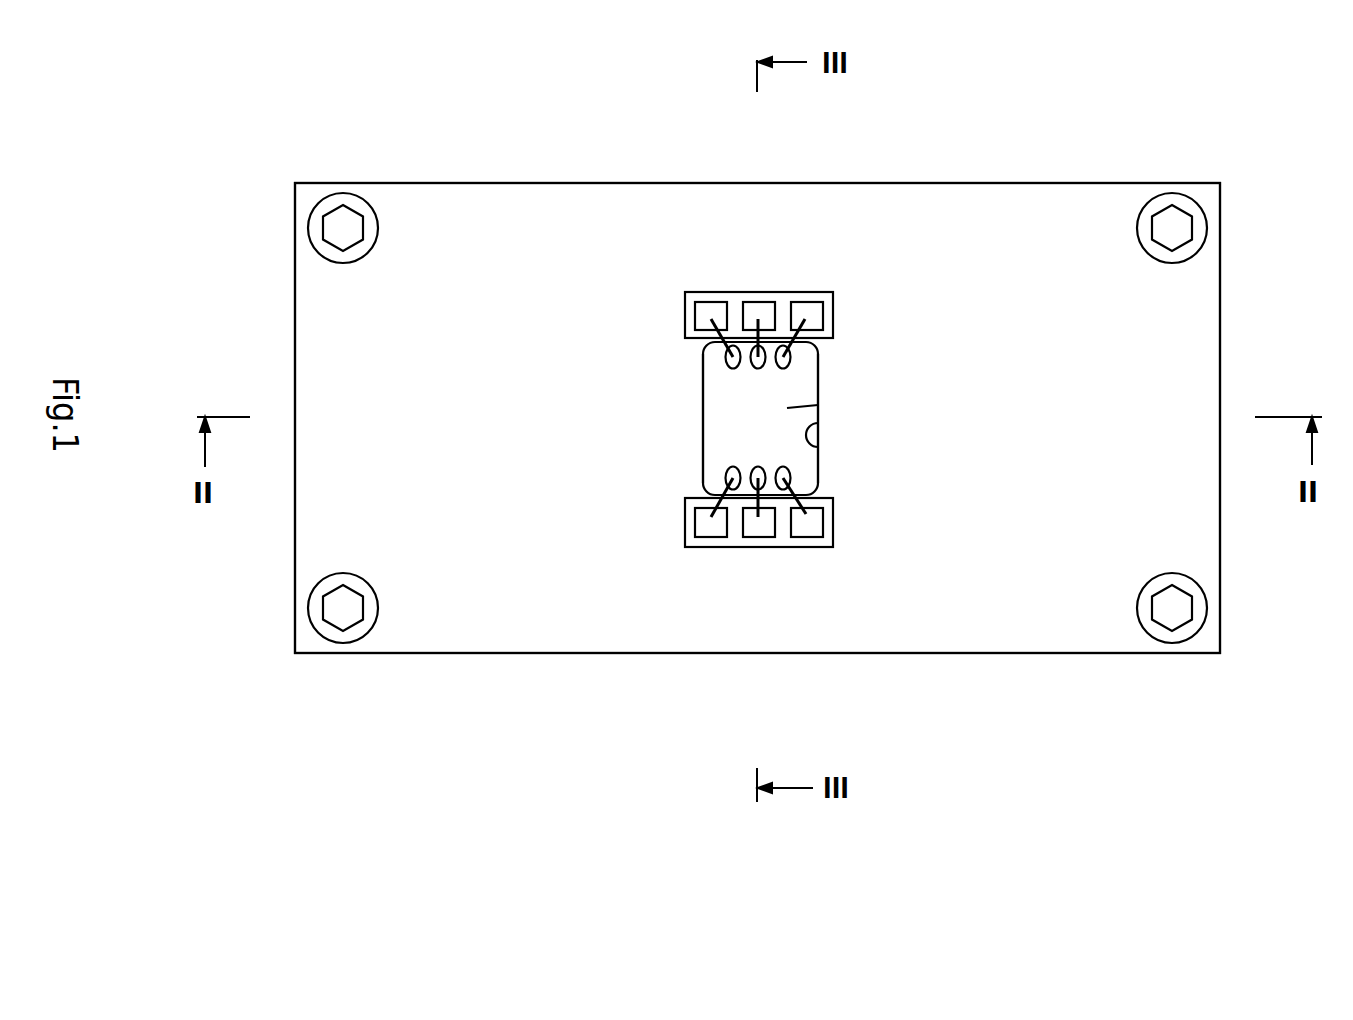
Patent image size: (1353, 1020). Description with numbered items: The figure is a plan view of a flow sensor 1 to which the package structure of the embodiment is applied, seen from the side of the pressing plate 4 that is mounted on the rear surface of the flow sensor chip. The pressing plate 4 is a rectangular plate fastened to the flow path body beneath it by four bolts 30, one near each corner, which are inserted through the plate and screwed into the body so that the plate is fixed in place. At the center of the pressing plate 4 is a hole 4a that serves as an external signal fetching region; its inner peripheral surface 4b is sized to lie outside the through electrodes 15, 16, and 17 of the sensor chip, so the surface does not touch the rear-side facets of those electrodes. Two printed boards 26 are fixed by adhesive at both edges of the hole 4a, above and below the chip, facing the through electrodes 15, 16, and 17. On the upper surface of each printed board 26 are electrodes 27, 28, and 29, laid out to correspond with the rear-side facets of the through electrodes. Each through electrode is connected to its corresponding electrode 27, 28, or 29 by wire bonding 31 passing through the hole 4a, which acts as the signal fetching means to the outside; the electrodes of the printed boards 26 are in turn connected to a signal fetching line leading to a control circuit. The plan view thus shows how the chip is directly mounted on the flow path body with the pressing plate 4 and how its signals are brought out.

The flow sensor 1 is at (1151, 172).
The pressing plate 4 is at (1082, 183).
The hole 4a is at (818, 405).
The inner peripheral surface 4b is at (818, 453).
The through electrode 15 is at (757, 468).
The through electrode 16 is at (703, 352).
The through electrode 17 is at (800, 358).
The printed board 26 is at (838, 282).
The electrode 27 is at (760, 302).
The electrode 28 is at (708, 302).
The electrode 29 is at (808, 292).
The bolt 30 is at (338, 203).
The wire bonding 31 is at (725, 357).